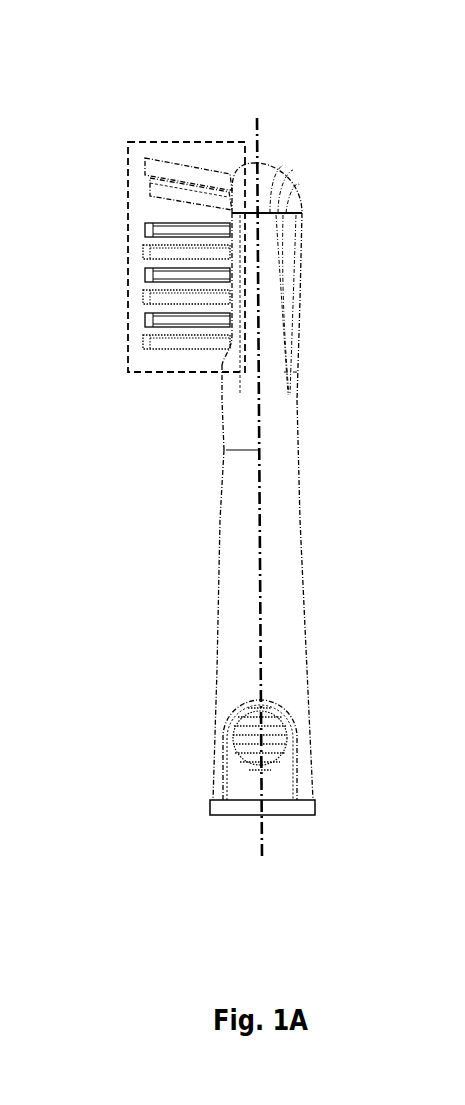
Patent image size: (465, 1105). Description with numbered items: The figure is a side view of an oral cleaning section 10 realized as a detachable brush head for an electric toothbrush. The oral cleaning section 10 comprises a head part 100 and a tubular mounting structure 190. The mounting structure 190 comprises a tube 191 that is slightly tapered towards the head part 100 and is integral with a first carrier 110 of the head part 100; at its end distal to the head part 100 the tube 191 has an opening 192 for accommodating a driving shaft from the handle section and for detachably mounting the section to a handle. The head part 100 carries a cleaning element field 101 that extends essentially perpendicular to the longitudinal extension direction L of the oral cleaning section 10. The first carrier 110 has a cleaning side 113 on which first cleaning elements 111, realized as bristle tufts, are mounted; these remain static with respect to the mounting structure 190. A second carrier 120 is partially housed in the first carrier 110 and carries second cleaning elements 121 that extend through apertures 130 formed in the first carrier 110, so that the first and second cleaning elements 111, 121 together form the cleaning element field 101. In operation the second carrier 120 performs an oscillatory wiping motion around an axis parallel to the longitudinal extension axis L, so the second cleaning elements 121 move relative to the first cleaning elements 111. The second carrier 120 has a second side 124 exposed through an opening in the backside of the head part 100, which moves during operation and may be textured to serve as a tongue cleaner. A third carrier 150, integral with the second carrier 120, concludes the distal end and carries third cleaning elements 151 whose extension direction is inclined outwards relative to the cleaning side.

The oral cleaning section 10 is at (113, 103).
The head part 100 is at (252, 103).
The cleaning element field 101 is at (143, 140).
The first carrier 110 is at (228, 290).
The first cleaning elements 111 is at (145, 230).
The cleaning side 113 is at (218, 380).
The second carrier 120 is at (304, 243).
The second cleaning elements 121 is at (143, 347).
The second side 124 is at (302, 257).
The apertures 130 is at (223, 345).
The third carrier 150 is at (283, 162).
The third cleaning elements 151 is at (145, 163).
The mounting structure 190 is at (203, 563).
The tube 191 is at (310, 628).
The opening 192 is at (272, 815).
The longitudinal extension direction L is at (263, 542).